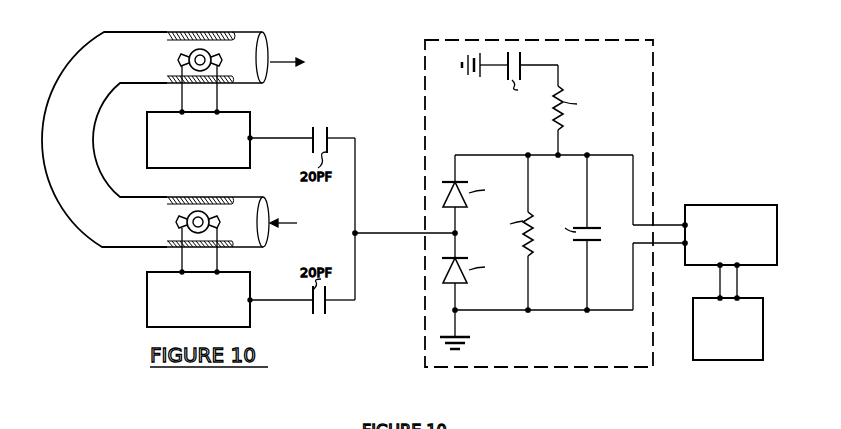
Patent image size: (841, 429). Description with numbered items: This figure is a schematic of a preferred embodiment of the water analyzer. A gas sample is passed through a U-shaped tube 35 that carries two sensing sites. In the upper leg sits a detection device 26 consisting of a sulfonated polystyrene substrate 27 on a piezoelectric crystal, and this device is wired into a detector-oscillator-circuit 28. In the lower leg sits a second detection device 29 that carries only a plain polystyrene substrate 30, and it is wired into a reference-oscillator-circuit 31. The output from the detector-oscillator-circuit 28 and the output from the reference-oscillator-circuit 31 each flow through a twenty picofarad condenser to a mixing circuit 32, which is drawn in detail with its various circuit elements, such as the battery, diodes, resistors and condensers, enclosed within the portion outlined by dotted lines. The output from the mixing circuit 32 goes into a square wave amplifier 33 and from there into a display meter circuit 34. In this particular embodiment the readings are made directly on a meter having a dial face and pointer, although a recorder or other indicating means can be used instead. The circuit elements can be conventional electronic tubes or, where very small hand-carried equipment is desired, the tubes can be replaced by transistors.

The detection device 26 is at (192, 50).
The sulfonated polystyrene substrate 27 is at (205, 53).
The detector-oscillator-circuit 28 is at (250, 117).
The second detection device 29 is at (190, 212).
The polystyrene substrate 30 is at (200, 215).
The reference-oscillator-circuit 31 is at (147, 297).
The mixing circuit 32 is at (654, 95).
The square wave amplifier 33 is at (728, 204).
The display meter circuit 34 is at (719, 361).
The U-shaped gas tube 35 is at (58, 105).